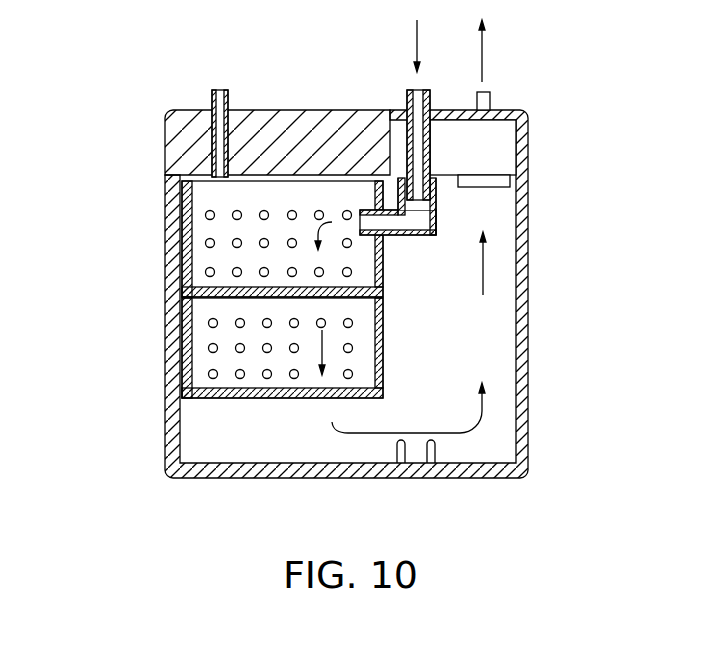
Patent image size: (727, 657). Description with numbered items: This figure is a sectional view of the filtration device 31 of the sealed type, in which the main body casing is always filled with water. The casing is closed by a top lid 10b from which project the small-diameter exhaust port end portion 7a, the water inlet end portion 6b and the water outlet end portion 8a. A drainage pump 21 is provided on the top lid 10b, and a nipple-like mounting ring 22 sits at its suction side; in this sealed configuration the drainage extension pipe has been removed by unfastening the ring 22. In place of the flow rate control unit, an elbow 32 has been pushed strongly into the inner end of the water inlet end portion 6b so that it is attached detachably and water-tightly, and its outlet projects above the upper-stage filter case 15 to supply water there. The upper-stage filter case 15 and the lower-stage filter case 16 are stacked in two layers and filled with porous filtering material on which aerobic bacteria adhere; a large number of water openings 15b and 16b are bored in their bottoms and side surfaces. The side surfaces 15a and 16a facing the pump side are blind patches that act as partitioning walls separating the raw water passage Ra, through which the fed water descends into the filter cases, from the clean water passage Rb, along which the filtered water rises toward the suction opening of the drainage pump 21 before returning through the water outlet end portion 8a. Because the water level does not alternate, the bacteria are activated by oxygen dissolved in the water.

The top lid 10b is at (165, 142).
The exhaust port end portion 7a is at (212, 95).
The water openings 15b is at (241, 239).
The upper-stage filter case 15 is at (270, 173).
The water inlet end portion 6b is at (407, 97).
The water outlet end portion 8a is at (490, 98).
The drainage pump 21 is at (505, 152).
The nipple-like mounting ring 22 is at (498, 187).
The elbow 32 is at (436, 238).
The side surface of upper-stage filter case 15a is at (382, 270).
The raw water passage Ra is at (322, 345).
The side surface of lower-stage filter case 16a is at (382, 372).
The water openings 16b is at (183, 322).
The lower-stage filter case 16 is at (270, 416).
The clean water passage Rb is at (482, 412).
The filtration device of the sealed type 31 is at (542, 297).